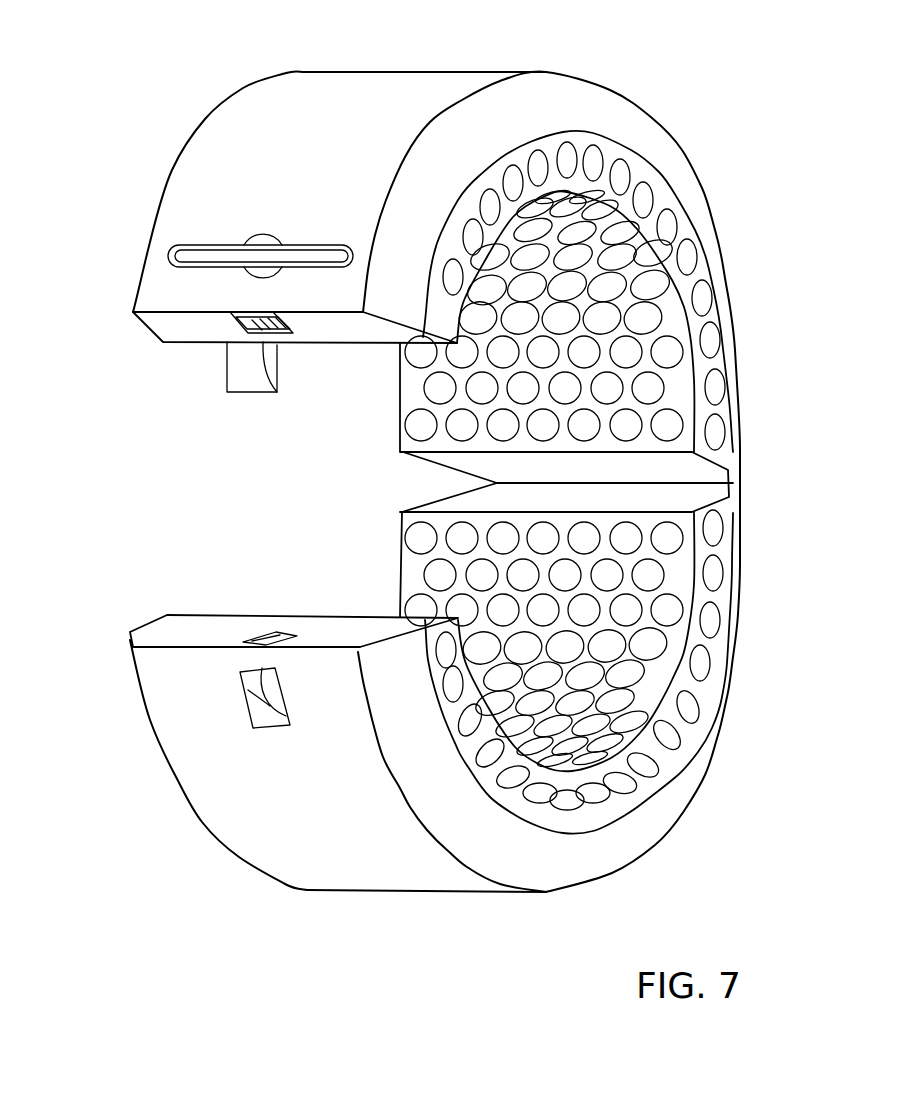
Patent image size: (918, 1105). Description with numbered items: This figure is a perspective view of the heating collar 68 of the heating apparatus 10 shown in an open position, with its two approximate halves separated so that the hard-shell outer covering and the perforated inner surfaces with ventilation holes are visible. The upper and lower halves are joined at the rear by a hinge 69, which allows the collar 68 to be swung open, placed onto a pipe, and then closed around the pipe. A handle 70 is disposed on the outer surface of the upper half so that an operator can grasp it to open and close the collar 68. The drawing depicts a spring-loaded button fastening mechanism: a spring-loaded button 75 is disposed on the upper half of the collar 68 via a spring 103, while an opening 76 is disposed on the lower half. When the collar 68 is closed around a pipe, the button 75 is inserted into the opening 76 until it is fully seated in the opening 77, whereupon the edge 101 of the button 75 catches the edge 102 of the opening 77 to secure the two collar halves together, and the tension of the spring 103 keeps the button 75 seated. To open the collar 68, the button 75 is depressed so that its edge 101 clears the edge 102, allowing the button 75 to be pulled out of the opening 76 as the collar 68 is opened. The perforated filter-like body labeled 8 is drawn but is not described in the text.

The heating apparatus 10 is at (112, 160).
The perforated filter body 8 is at (633, 673).
The heating collar 68 is at (293, 103).
The hinge 69 is at (737, 481).
The handle 70 is at (217, 260).
The spring-loaded button 75 is at (240, 378).
The opening 76 is at (273, 633).
The opening 77 is at (263, 703).
The edge 101 is at (227, 328).
The edge 102 is at (262, 685).
The spring 103 is at (303, 347).